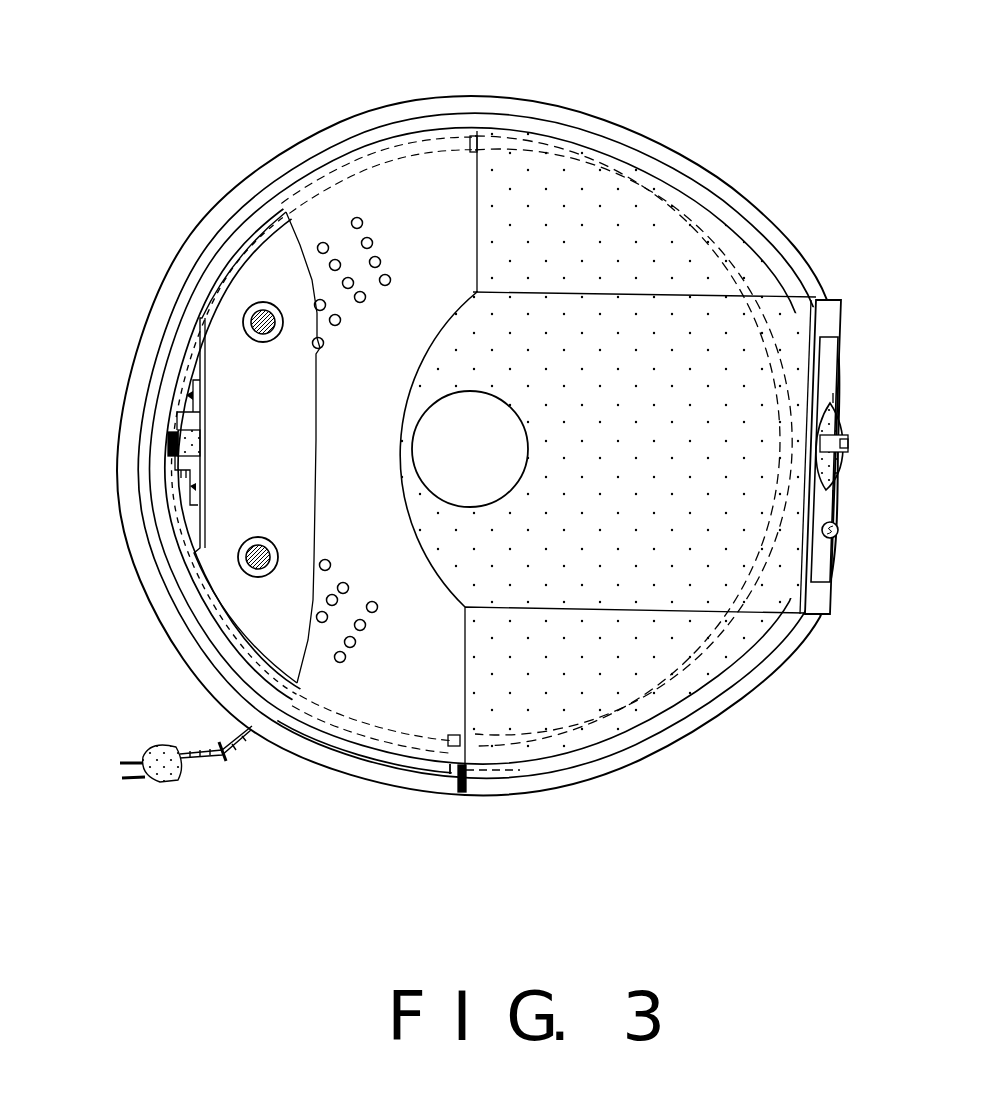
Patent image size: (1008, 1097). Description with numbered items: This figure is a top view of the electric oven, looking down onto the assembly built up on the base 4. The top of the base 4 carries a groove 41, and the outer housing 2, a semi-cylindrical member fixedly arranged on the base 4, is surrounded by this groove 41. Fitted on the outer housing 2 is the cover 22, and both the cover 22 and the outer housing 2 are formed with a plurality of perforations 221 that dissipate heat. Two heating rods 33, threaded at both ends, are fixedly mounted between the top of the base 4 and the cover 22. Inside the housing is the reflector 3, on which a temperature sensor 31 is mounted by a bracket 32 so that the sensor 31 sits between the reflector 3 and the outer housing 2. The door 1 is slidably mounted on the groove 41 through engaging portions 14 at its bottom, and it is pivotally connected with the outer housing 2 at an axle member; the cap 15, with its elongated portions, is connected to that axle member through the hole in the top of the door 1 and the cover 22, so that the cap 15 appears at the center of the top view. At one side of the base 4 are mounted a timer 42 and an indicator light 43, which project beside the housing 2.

The door 1 is at (728, 600).
The engaging portions 14 is at (517, 133).
The cap 15 is at (497, 421).
The outer housing 2 is at (172, 373).
The reflector 3 is at (196, 313).
The temperature sensor 31 is at (188, 507).
The bracket 32 is at (160, 446).
The heating rods 33 is at (256, 305).
The base 4 is at (150, 612).
The groove 41 is at (398, 143).
The timer 42 is at (838, 410).
The indicator light 43 is at (840, 525).
The cover 22 is at (402, 707).
The perforations 221 is at (352, 219).